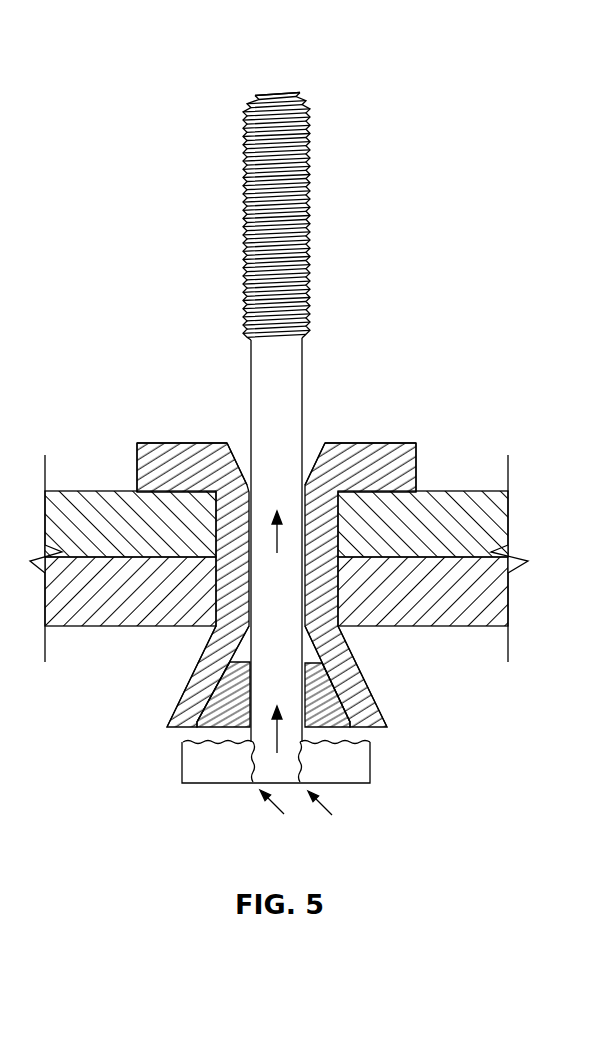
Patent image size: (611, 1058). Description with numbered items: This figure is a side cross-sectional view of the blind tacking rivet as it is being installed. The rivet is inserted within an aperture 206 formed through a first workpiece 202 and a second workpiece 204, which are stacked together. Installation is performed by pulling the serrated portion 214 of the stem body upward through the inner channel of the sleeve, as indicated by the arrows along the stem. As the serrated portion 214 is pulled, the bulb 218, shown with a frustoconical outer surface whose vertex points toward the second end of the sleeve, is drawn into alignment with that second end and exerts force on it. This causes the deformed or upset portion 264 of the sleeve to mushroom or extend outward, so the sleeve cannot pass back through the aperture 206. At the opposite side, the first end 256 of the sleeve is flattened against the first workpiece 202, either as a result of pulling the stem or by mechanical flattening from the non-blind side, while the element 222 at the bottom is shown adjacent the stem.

The serrated portion 214 is at (288, 177).
The aperture 206 is at (214, 524).
The first end 256 is at (402, 468).
The first workpiece 202 is at (497, 521).
The second workpiece 204 is at (497, 606).
The upset portion 264 is at (373, 684).
The bulb 218 is at (185, 727).
The nut 222 is at (250, 784).